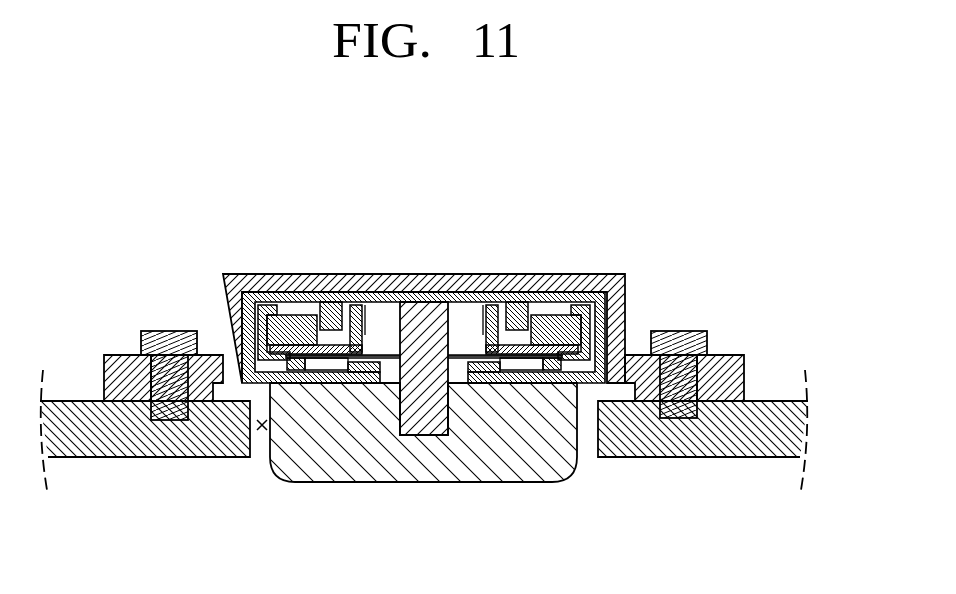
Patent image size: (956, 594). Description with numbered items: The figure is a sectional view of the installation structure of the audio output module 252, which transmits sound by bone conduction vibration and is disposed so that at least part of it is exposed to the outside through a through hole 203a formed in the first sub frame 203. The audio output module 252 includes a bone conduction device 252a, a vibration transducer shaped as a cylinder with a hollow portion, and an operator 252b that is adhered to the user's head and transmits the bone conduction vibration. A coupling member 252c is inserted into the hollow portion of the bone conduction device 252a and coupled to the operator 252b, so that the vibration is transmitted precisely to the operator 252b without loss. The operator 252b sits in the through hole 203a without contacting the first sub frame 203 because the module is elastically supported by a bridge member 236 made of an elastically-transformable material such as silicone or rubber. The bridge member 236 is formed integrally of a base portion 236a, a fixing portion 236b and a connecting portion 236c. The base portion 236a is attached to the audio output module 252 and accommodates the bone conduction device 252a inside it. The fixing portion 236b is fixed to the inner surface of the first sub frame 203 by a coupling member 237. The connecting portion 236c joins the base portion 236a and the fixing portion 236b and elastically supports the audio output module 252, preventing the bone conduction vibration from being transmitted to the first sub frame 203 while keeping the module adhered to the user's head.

The first sub frame 203 is at (778, 445).
The through hole 203a is at (262, 432).
The bridge member 236 is at (428, 275).
The base portion 236a is at (348, 280).
The fixing portion 236b is at (635, 356).
The connecting portion 236c is at (327, 191).
The coupling member 237 is at (167, 340).
The audio output module 252 is at (423, 437).
The bone conduction device 252a is at (487, 372).
The operator 252b is at (523, 445).
The coupling member 252c is at (419, 420).